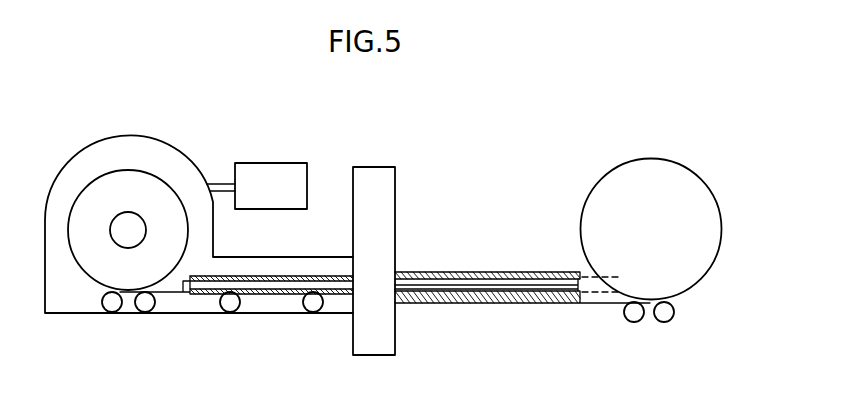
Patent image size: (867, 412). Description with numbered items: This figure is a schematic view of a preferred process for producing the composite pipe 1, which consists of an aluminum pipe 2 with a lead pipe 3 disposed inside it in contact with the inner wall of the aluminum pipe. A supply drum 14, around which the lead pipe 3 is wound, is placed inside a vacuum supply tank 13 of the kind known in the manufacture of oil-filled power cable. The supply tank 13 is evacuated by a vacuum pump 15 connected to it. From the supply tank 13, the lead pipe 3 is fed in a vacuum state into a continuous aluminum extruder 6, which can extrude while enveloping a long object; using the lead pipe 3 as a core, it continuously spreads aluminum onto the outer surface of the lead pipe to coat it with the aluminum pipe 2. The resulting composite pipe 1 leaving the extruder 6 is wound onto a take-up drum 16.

The composite pipe 1 is at (521, 317).
The aluminum pipe 2 is at (492, 272).
The lead pipe 3 is at (283, 293).
The continuous aluminum extruder 6 is at (383, 178).
The vacuum supply tank 13 is at (137, 145).
The supply drum 14 is at (107, 190).
The vacuum pump 15 is at (282, 172).
The take-up drum 16 is at (595, 195).